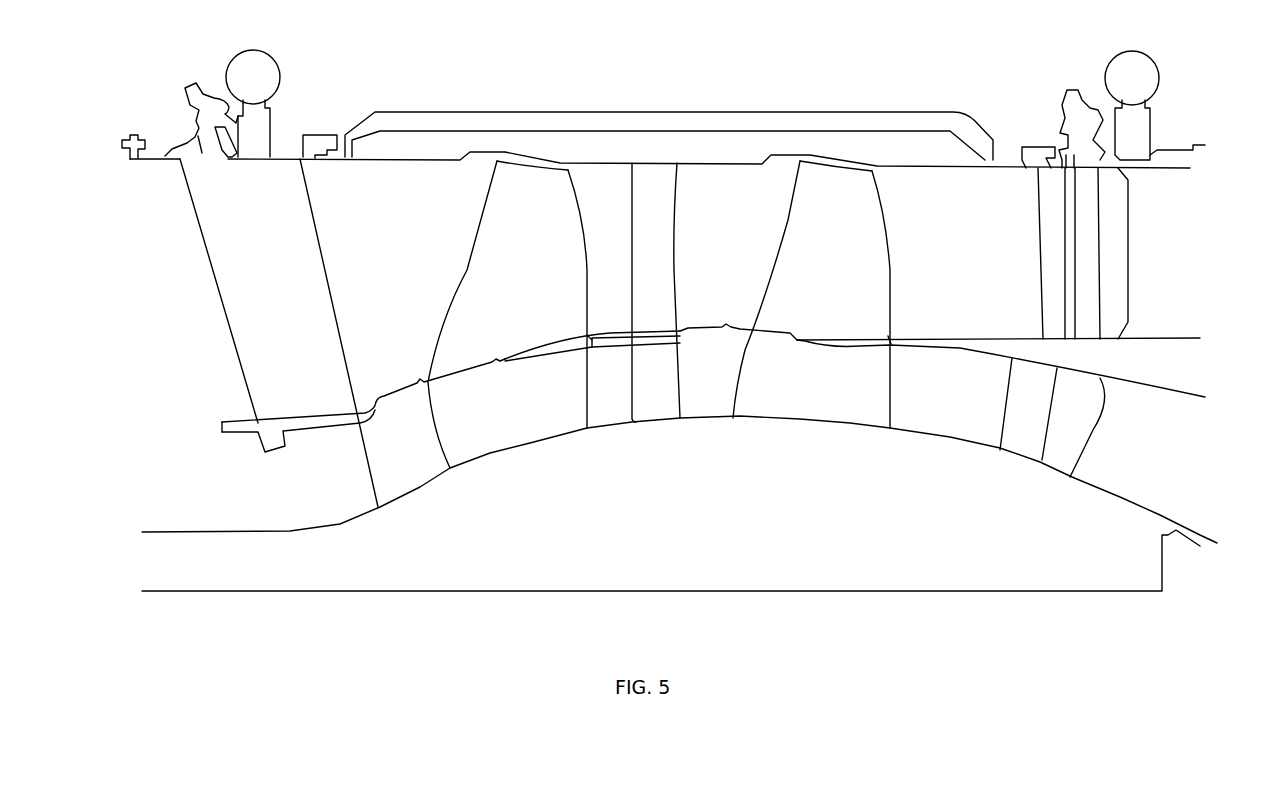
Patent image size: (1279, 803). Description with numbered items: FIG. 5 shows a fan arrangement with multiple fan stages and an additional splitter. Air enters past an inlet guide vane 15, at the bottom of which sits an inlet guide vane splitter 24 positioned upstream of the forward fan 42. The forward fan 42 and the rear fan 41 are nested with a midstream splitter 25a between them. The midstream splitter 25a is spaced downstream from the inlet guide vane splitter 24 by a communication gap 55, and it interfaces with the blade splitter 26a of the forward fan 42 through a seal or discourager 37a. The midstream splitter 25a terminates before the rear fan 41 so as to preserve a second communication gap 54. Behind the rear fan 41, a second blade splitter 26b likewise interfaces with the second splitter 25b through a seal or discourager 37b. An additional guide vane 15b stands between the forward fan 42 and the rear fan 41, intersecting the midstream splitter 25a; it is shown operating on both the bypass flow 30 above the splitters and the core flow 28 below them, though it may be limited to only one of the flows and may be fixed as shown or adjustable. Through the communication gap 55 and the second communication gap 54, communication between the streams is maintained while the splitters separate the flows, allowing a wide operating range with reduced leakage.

The inlet guide vane 15 is at (230, 267).
The guide vane 15b is at (675, 246).
The inlet guide vane splitter 24 is at (318, 428).
The midstream splitter 25a is at (612, 333).
The second splitter 25b is at (978, 338).
The blade splitter 26a is at (548, 362).
The second blade splitter 26b is at (820, 349).
The core flow 28 is at (543, 425).
The bypass flow 30 is at (435, 215).
The seal or discourager 37a is at (585, 345).
The seal or discourager 37b is at (888, 340).
The rear fan 41 is at (886, 248).
The forward fan 42 is at (467, 268).
The second communication gap 54 is at (729, 328).
The communication gap 55 is at (419, 381).